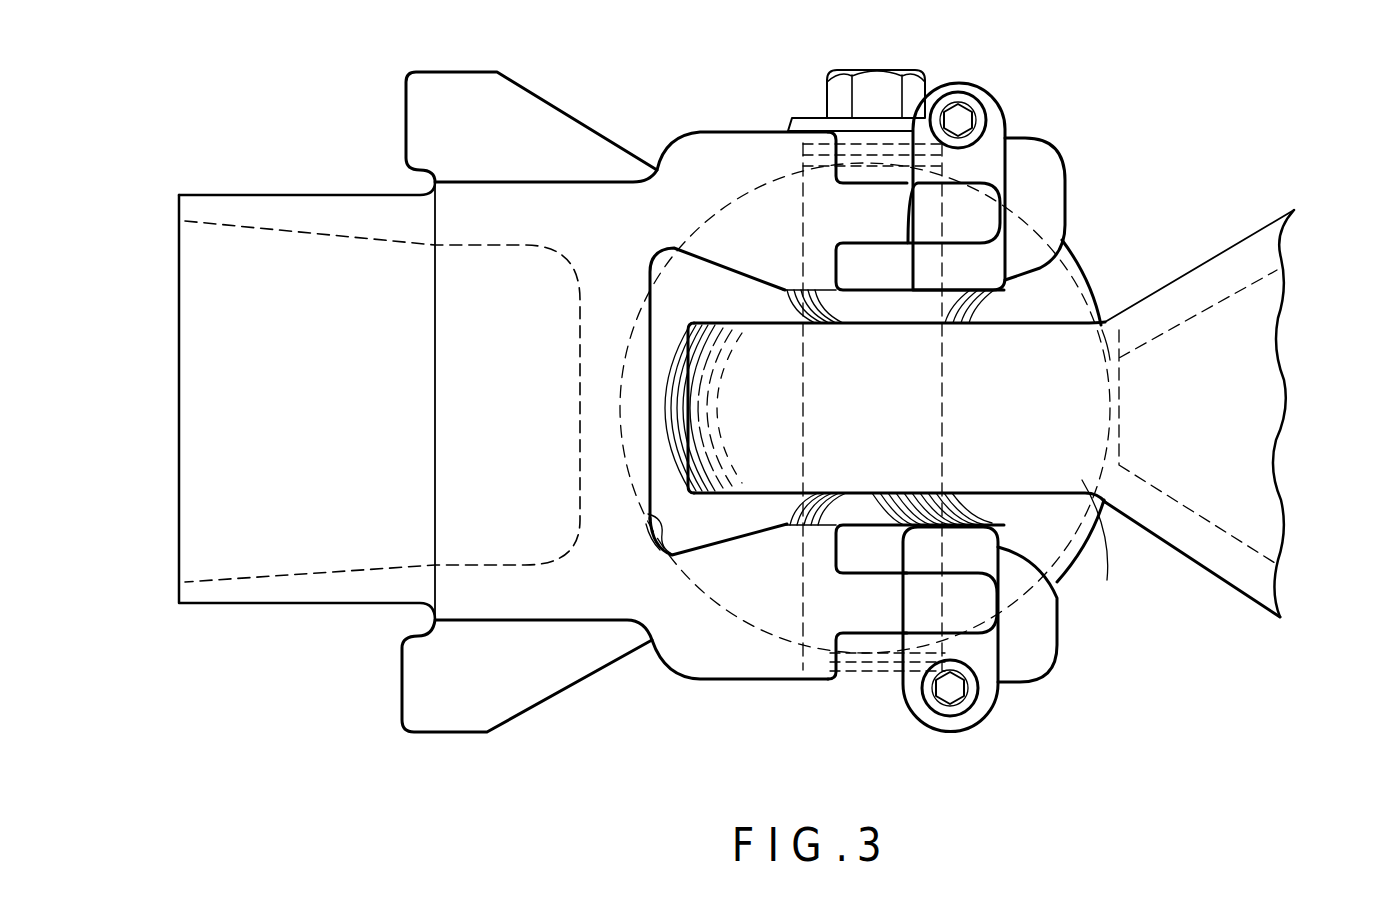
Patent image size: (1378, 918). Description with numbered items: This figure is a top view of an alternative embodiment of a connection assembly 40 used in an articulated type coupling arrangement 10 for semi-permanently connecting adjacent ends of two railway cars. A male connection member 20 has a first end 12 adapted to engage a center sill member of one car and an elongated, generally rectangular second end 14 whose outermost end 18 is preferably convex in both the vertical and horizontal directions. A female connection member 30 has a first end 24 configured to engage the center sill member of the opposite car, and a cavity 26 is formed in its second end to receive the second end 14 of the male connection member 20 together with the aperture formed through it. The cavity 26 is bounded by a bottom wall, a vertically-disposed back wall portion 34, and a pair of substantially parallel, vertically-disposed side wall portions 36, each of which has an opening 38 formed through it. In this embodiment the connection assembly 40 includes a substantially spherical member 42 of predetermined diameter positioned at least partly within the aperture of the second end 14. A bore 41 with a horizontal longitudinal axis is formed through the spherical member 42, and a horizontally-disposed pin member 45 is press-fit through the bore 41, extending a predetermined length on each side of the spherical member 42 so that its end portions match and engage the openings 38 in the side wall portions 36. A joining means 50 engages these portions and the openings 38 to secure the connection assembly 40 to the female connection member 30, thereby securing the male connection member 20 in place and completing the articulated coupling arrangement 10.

The articulated coupling arrangement 10 is at (1005, 100).
The first end of male connection member 12 is at (1274, 366).
The second end of male connection member 14 is at (880, 408).
The outermost end of second end 18 is at (668, 406).
The male connection member 20 is at (1192, 246).
The first end of female connection member 24 is at (275, 205).
The cavity 26 is at (712, 305).
The female connection member 30 is at (565, 95).
The back wall portion 34 is at (650, 511).
The side wall portions 36 is at (722, 140).
The opening 38 is at (814, 250).
The connection assembly 40 is at (997, 307).
The bore 41 is at (944, 394).
The spherical member 42 is at (975, 510).
The pin member 45 is at (916, 444).
The joining means 50 is at (890, 698).